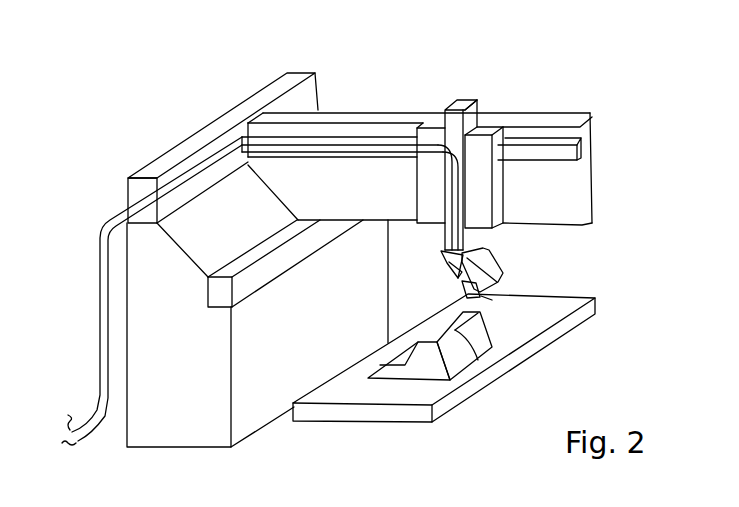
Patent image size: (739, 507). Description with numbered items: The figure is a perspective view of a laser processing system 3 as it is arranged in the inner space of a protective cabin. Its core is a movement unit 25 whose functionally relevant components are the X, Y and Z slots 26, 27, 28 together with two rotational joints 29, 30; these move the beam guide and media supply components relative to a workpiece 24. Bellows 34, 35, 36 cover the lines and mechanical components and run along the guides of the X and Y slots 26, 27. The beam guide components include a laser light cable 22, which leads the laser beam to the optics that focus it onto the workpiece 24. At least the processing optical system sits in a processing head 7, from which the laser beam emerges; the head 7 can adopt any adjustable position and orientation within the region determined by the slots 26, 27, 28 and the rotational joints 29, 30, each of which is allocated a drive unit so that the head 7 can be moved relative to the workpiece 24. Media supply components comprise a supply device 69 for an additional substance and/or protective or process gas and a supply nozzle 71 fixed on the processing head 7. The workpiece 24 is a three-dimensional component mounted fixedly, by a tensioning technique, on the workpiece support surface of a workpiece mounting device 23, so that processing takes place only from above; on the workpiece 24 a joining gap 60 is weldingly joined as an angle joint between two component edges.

The laser processing system 3 is at (572, 82).
The processing head 7 is at (460, 287).
The laser light cable 22 is at (181, 186).
The workpiece mounting device 23 is at (563, 327).
The workpiece 24 is at (420, 371).
The movement unit 25 is at (231, 76).
The X slot 26 is at (192, 108).
The Y slot 27 is at (500, 99).
The Z slot 28 is at (478, 188).
The rotational joint 29 is at (443, 253).
The rotational joint 30 is at (446, 264).
The bellows 34 is at (135, 188).
The bellows 35 is at (212, 292).
The bellows 36 is at (366, 163).
The joining gap 60 is at (478, 353).
The supply device 69 is at (518, 263).
The supply nozzle 71 is at (495, 299).